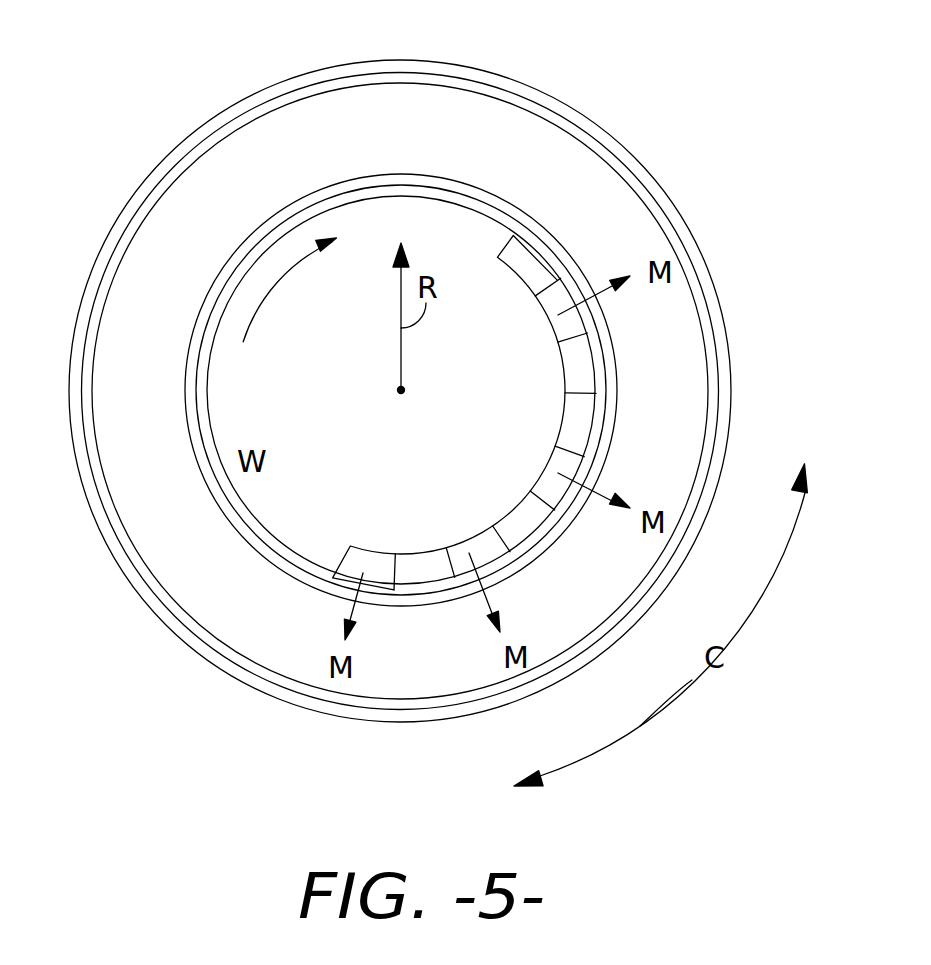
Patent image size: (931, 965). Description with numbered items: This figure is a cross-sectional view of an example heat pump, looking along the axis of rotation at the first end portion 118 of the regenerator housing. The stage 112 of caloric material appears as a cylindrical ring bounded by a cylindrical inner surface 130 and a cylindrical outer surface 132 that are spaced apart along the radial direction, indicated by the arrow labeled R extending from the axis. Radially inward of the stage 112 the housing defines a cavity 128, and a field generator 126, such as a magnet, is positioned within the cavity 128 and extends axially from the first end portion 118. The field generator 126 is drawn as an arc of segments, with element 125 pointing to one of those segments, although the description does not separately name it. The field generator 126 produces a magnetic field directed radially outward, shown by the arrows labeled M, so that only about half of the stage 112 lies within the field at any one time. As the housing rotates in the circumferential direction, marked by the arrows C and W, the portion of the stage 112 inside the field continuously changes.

The stage 112 is at (199, 190).
The first end portion 118 is at (686, 120).
The magnet segments 125 is at (466, 518).
The field generator 126 is at (363, 547).
The cavity 128 is at (282, 499).
The cylindrical inner surface 130 is at (428, 165).
The cylindrical outer surface 132 is at (371, 89).